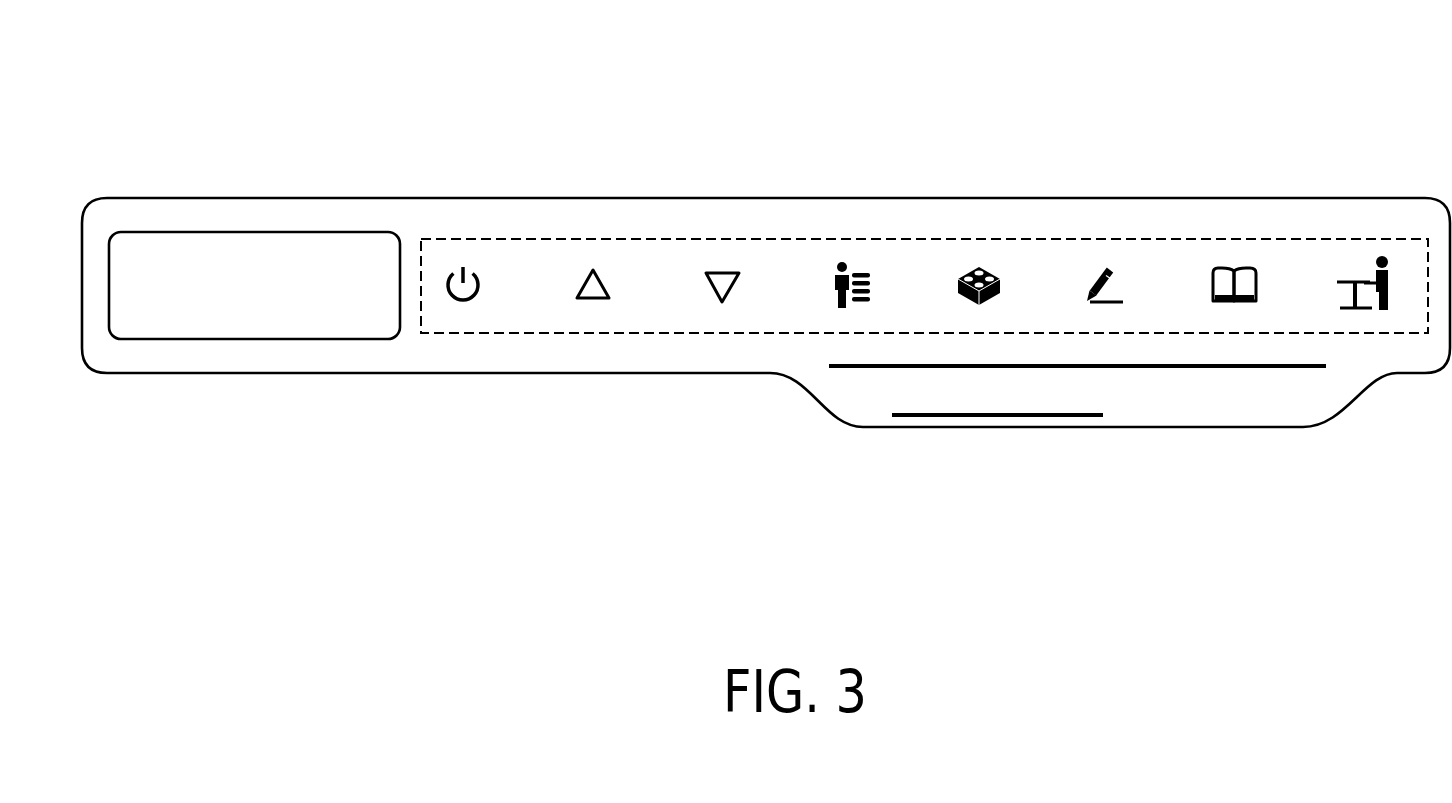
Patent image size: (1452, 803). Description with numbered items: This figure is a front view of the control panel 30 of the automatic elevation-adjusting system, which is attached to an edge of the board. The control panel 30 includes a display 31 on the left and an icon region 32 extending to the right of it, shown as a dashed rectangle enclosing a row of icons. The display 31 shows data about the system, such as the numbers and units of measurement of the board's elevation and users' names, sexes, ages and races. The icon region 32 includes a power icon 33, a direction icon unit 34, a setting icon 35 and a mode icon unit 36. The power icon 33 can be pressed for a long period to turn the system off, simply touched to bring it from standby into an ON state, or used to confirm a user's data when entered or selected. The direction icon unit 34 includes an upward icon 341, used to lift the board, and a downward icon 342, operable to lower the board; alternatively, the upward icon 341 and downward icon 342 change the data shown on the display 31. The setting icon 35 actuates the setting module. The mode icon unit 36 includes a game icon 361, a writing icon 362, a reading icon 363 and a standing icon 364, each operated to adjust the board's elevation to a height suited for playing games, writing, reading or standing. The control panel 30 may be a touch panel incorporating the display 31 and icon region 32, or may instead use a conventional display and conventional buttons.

The control panel 30 is at (422, 362).
The display 31 is at (255, 254).
The icon region 32 is at (678, 332).
The power icon 33 is at (479, 268).
The direction icon unit 34 is at (743, 92).
The upward icon 341 is at (600, 268).
The downward icon 342 is at (722, 268).
The setting icon 35 is at (856, 262).
The mode icon unit 36 is at (1363, 92).
The game icon 361 is at (981, 262).
The writing icon 362 is at (1113, 262).
The reading icon 363 is at (1237, 266).
The standing icon 364 is at (1362, 268).